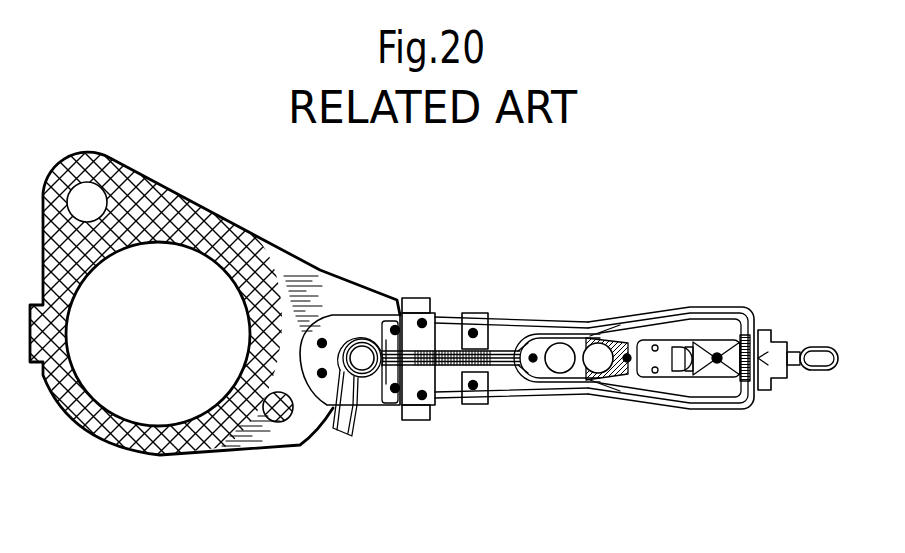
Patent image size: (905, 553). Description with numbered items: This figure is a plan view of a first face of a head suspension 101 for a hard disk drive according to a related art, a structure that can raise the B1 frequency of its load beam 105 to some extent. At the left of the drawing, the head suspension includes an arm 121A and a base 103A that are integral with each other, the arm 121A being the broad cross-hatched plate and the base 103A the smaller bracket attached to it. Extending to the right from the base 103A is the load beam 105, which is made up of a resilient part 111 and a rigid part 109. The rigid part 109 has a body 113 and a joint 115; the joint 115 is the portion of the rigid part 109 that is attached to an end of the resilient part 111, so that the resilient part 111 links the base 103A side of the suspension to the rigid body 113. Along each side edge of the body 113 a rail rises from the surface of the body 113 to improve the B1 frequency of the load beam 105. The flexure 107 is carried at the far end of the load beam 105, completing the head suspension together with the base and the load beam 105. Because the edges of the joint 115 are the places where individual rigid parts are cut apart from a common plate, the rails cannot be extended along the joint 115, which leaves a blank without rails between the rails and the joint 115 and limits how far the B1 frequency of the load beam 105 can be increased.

The head suspension 101 is at (635, 183).
The base 103A is at (383, 307).
The load beam 105 is at (583, 320).
The flexure 107 is at (747, 308).
The rigid part 109 is at (627, 345).
The resilient part 111 is at (452, 307).
The body 113 is at (615, 396).
The joint 115 is at (488, 405).
The arm 121A is at (282, 270).